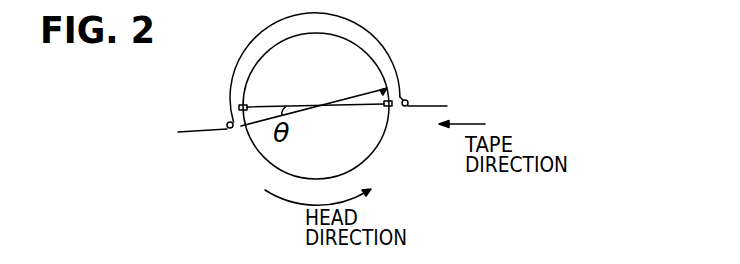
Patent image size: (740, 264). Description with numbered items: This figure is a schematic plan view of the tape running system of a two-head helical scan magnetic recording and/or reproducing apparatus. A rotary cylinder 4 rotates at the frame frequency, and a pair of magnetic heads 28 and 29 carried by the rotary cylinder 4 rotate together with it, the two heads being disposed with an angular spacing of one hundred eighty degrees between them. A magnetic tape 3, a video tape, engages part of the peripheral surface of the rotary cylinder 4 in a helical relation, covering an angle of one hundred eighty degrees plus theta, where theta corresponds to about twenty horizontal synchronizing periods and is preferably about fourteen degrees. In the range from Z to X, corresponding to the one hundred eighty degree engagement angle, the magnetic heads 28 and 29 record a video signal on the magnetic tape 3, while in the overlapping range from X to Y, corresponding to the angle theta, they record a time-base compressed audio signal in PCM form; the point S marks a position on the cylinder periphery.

The magnetic tape 3 is at (446, 106).
The rotary cylinder 4 is at (369, 53).
The magnetic head 28 is at (391, 108).
The magnetic head 29 is at (233, 93).
The head scanning point S is at (392, 86).
The point X is at (213, 109).
The point Y is at (243, 115).
The point Z is at (413, 124).